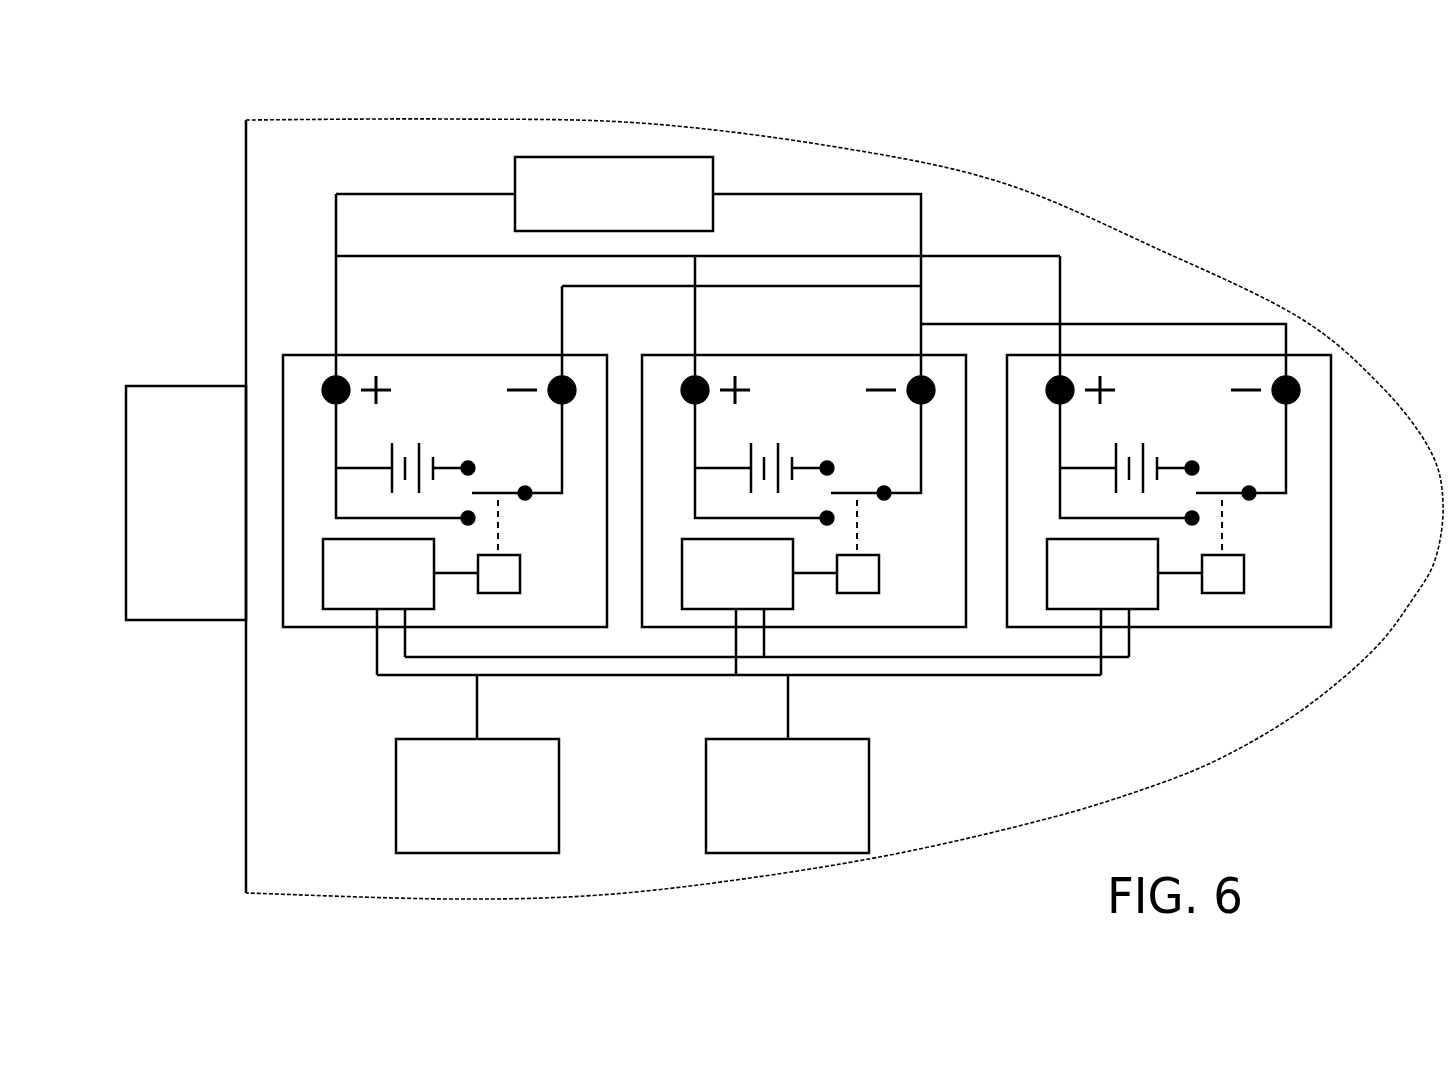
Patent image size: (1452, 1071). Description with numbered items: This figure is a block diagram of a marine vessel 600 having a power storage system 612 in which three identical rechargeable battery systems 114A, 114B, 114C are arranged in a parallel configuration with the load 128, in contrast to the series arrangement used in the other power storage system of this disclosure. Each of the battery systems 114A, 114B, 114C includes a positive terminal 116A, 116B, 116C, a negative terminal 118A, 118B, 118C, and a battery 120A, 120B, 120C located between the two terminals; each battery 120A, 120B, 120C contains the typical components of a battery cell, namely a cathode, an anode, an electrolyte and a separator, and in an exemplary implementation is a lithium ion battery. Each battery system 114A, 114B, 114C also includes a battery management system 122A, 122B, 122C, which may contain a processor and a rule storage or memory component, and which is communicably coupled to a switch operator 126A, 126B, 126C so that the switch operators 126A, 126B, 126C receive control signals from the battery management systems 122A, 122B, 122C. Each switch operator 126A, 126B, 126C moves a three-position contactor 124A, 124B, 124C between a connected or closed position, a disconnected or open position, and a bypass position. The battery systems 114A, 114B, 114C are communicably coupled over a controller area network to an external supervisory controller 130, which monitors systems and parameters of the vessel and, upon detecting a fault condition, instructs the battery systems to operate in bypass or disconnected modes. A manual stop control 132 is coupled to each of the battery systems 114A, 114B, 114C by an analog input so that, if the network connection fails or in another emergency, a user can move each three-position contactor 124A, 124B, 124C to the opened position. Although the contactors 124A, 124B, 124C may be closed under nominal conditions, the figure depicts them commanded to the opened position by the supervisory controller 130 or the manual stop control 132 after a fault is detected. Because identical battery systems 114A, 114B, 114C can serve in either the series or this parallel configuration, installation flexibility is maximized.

The marine vessel 600 is at (210, 108).
The power storage system 612 is at (1042, 228).
The load 128 is at (533, 183).
The supervisory controller 130 is at (503, 758).
The manual stop control 132 is at (842, 767).
The rechargeable battery system 114A is at (431, 513).
The rechargeable battery system 114B is at (787, 519).
The rechargeable battery system 114C is at (1150, 502).
The positive terminal 116A is at (380, 380).
The positive terminal 116B is at (740, 358).
The positive terminal 116C is at (1103, 343).
The negative terminal 118A is at (533, 380).
The negative terminal 118B is at (882, 358).
The negative terminal 118C is at (1240, 343).
The battery 120A is at (428, 443).
The battery 120B is at (799, 436).
The battery 120C is at (1164, 436).
The battery management system 122A is at (360, 610).
The battery management system 122B is at (722, 632).
The battery management system 122C is at (1086, 630).
The three-position contactor 124A is at (503, 492).
The three-position contactor 124B is at (858, 480).
The three-position contactor 124C is at (1227, 480).
The switch operator 126A is at (520, 568).
The switch operator 126B is at (894, 558).
The switch operator 126C is at (1260, 558).